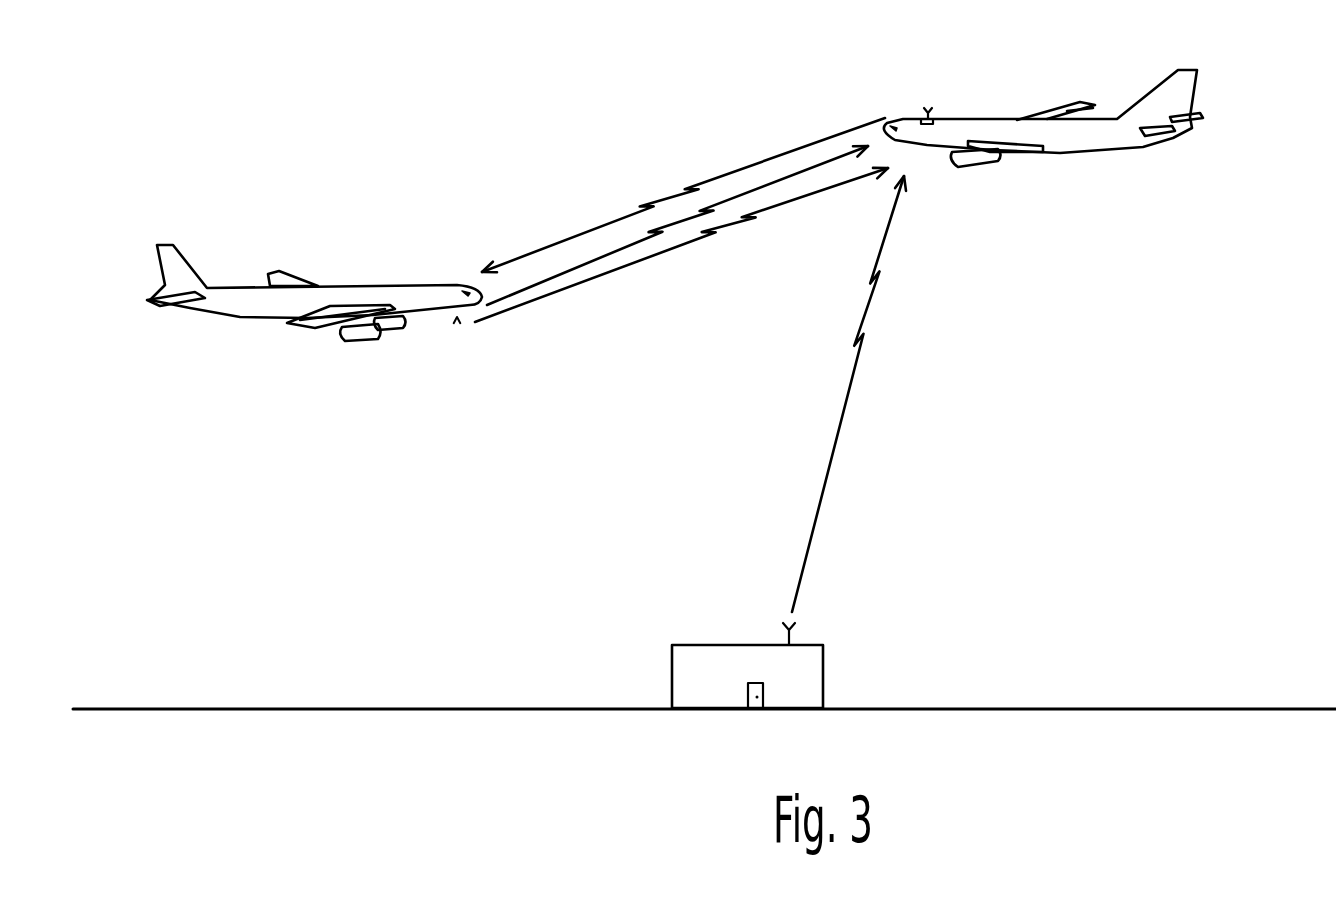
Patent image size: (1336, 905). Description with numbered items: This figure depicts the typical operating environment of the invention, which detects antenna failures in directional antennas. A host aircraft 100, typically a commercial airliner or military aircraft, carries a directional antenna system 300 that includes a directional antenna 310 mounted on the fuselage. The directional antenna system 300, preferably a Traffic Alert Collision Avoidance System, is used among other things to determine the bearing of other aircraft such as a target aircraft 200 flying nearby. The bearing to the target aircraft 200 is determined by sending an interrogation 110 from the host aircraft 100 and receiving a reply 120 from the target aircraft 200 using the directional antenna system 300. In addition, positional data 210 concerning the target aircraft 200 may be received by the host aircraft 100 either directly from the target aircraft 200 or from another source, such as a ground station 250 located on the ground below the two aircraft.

The host aircraft 100 is at (1020, 118).
The interrogation 110 is at (713, 182).
The reply 120 is at (797, 172).
The target aircraft 200 is at (343, 287).
The positional data 210 is at (670, 255).
The ground station 250 is at (823, 657).
The directional antenna system 300 is at (935, 120).
The directional antenna 310 is at (928, 112).